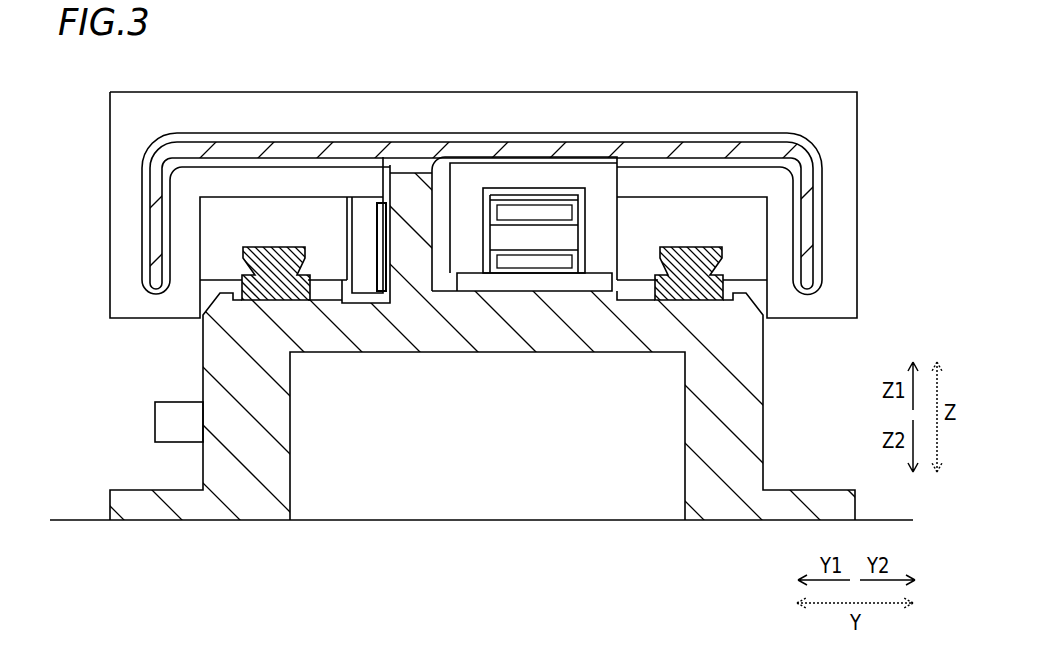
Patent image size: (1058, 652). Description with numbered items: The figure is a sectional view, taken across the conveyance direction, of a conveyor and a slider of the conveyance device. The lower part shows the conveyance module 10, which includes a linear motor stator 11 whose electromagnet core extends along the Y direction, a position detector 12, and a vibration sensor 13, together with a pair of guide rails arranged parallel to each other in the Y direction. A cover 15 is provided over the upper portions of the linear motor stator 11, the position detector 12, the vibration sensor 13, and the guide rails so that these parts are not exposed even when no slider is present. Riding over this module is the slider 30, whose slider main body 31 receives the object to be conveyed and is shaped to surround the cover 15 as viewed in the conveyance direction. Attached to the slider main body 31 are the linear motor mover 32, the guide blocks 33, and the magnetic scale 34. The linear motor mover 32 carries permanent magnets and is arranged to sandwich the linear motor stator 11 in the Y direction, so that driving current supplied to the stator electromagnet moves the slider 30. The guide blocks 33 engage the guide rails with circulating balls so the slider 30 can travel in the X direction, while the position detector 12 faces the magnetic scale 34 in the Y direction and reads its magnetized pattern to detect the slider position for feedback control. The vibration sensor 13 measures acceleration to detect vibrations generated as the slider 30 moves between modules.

The conveyance module 10 is at (794, 365).
The linear motor stator 11 is at (527, 245).
The position detector 12 is at (387, 262).
The vibration sensor 13 is at (155, 405).
The cover 15 is at (815, 163).
The slider 30 is at (785, 53).
The slider main body 31 is at (588, 92).
The linear motor mover 32 is at (507, 157).
The guide block 33 is at (284, 197).
The magnetic scale 34 is at (367, 203).